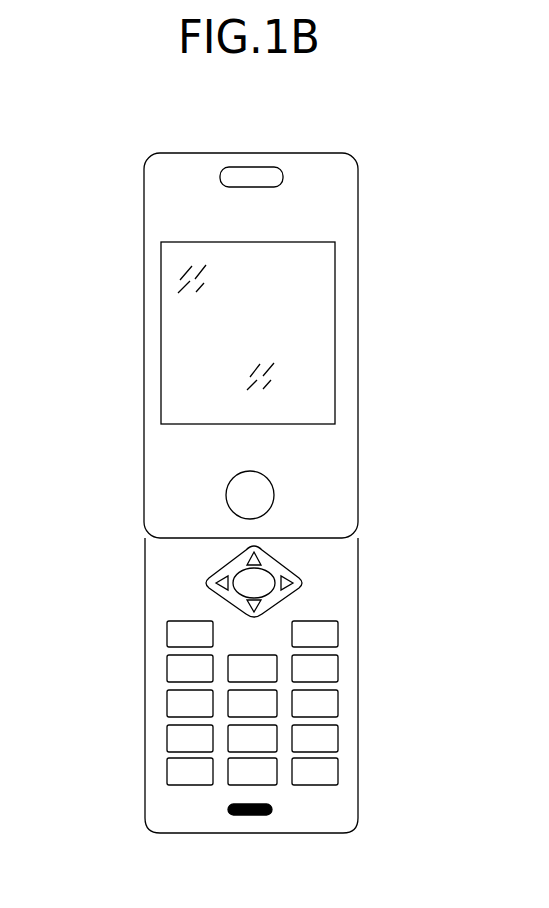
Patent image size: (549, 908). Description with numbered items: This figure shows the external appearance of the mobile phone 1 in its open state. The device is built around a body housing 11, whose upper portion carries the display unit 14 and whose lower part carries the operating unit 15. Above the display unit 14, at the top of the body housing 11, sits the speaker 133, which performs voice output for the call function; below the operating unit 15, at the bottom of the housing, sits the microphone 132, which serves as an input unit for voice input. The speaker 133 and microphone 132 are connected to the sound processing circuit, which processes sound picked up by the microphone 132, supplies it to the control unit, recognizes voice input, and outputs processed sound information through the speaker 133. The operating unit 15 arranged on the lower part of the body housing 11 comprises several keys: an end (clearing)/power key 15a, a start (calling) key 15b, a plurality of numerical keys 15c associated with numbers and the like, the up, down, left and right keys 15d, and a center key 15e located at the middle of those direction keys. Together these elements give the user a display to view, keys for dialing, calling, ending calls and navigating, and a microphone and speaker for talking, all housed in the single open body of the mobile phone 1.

The mobile phone 1 is at (386, 120).
The body housing 11 is at (350, 185).
The display unit 14 is at (311, 335).
The speaker 133 is at (248, 167).
The microphone 132 is at (262, 815).
The operating unit 15 is at (370, 542).
The end (clearing)/power key 15a is at (327, 630).
The start (calling) key 15b is at (178, 632).
The numerical keys 15c is at (158, 712).
The up, down, left and right keys 15d is at (221, 571).
The center key 15e is at (289, 571).